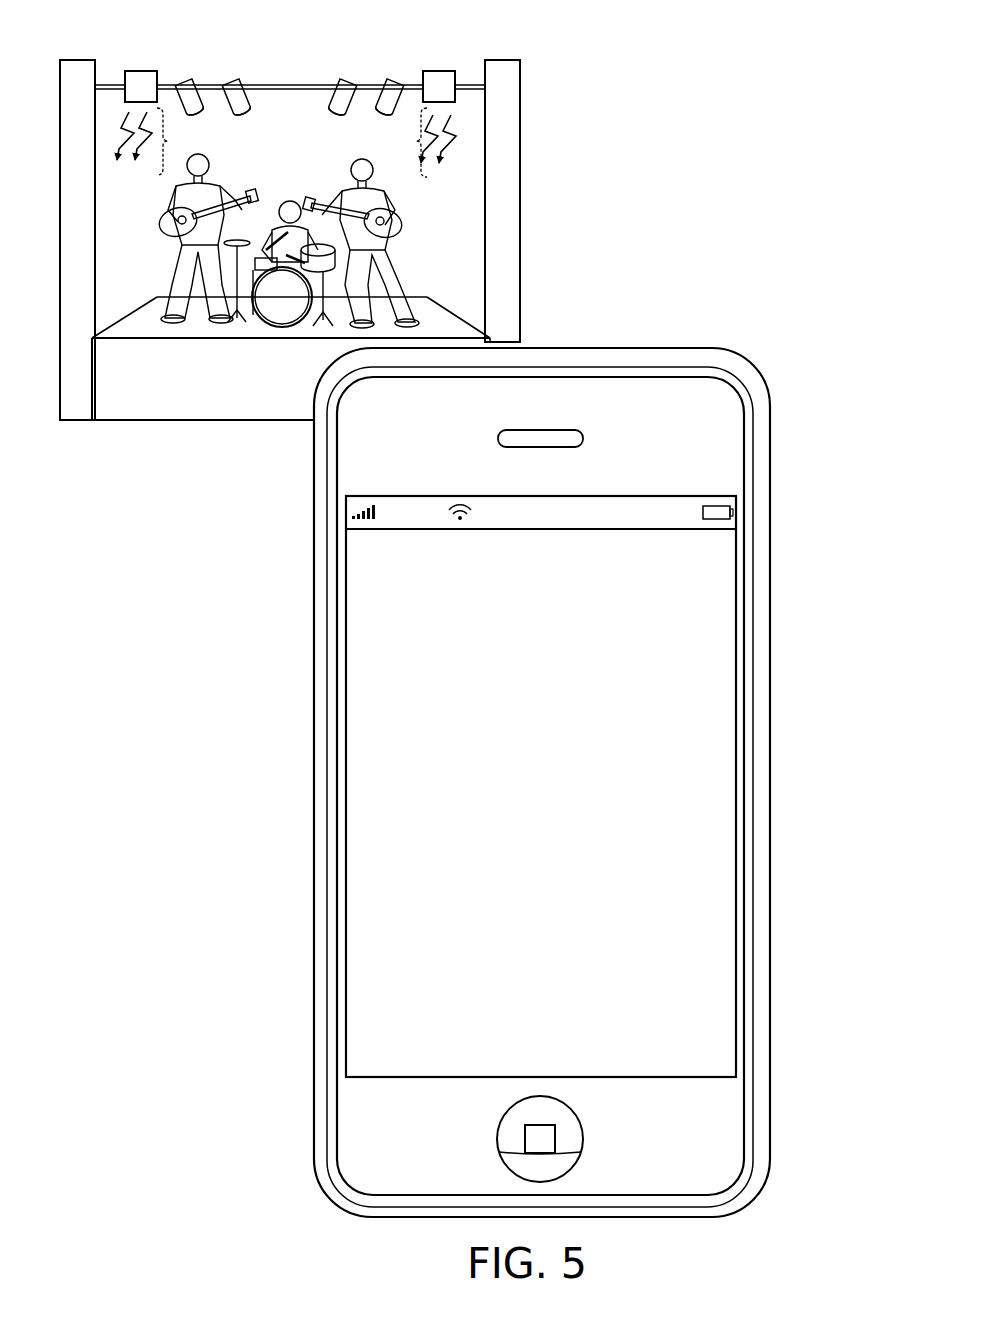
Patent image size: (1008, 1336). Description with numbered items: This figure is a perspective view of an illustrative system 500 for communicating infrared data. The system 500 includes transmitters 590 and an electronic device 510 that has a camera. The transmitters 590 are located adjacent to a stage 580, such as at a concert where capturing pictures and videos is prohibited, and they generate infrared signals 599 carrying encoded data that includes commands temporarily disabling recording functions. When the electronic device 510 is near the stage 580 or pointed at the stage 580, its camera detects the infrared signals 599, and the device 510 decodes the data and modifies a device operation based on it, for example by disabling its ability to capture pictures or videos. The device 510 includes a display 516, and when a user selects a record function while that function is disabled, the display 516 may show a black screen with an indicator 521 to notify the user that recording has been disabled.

The system 500 is at (651, 272).
The electronic device 510 is at (736, 351).
The display 516 is at (737, 566).
The indicator 521 is at (690, 757).
The stage 580 is at (263, 347).
The transmitters 590 is at (139, 80).
The infrared signals 599 is at (286, 142).